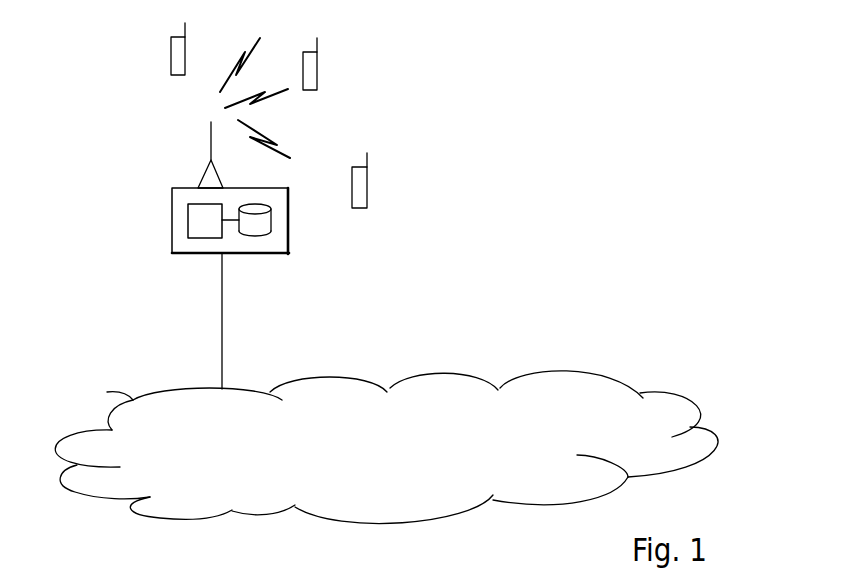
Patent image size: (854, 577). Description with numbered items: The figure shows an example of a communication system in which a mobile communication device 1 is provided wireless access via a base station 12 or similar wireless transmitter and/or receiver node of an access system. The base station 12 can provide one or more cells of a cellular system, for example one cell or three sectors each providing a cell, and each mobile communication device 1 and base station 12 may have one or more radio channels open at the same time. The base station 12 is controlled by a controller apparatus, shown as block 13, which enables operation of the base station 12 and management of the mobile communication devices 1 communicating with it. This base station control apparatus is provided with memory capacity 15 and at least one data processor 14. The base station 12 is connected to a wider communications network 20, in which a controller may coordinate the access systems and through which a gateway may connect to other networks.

The mobile communication device 1 is at (368, 167).
The base station 12 is at (173, 242).
The controller apparatus 13 is at (173, 228).
The data processor 14 is at (188, 227).
The memory capacity 15 is at (240, 235).
The wider communications network 20 is at (386, 445).